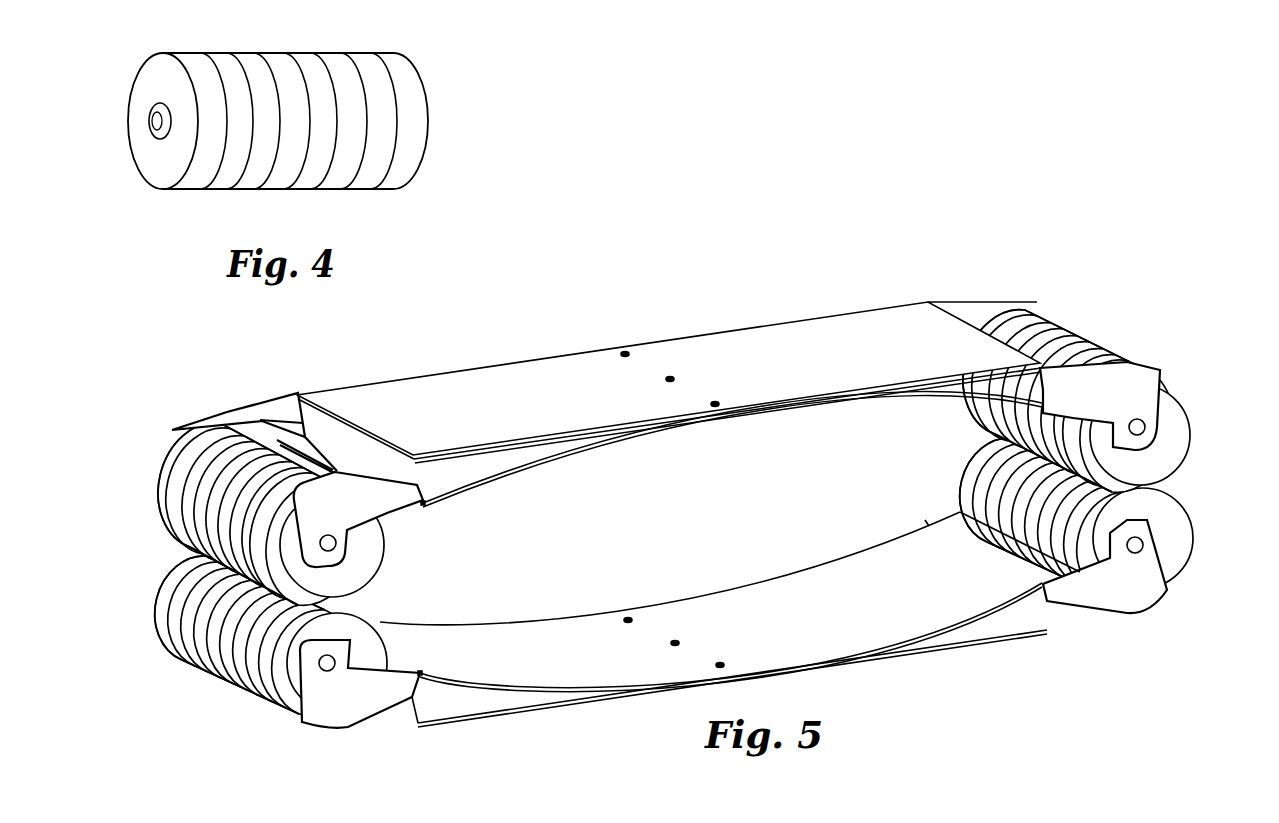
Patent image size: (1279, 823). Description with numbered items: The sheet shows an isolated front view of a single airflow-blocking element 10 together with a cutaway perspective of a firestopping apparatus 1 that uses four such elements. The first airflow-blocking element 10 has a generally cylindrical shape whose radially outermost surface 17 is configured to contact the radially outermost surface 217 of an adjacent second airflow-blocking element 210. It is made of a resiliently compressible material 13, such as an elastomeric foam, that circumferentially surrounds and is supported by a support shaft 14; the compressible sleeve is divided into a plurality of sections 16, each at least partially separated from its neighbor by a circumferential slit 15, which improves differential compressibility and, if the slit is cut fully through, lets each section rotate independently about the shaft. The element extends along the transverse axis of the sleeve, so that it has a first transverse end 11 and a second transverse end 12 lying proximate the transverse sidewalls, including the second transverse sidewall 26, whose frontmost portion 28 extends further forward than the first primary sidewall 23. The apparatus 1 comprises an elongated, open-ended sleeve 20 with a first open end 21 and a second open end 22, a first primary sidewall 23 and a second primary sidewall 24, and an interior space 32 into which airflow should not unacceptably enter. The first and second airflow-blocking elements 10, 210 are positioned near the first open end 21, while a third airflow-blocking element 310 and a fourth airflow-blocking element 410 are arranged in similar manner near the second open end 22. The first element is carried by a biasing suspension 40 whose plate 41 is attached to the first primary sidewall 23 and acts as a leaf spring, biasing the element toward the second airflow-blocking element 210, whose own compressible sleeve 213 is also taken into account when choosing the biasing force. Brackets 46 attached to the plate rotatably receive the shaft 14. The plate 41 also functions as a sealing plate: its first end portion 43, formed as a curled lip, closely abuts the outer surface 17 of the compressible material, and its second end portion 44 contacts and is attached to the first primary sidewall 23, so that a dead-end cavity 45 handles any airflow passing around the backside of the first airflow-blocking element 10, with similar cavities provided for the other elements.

In FIG. 5, the apparatus 1 is at (663, 483).
In FIG. 4, the first airflow-blocking element 10 is at (306, 125).
In FIG. 5, the first airflow-blocking element 10 is at (261, 503).
In FIG. 4, the first transverse end 11 is at (427, 105).
In FIG. 5, the first transverse end 11 is at (345, 538).
In FIG. 4, the second transverse end 12 is at (143, 78).
In FIG. 5, the second transverse end 12 is at (168, 445).
In FIG. 4, the resiliently compressible material 13 is at (363, 178).
In FIG. 5, the resiliently compressible material 13 is at (177, 508).
In FIG. 4, the support shaft 14 is at (152, 133).
In FIG. 5, the support shaft 14 is at (333, 548).
In FIG. 4, the slit 15 is at (237, 173).
In FIG. 4, the sections 16 is at (333, 175).
In FIG. 4, the radially outermost surface 17 is at (277, 58).
In FIG. 5, the radially outermost surface 17 is at (178, 477).
In FIG. 5, the sleeve 20 is at (669, 373).
In FIG. 5, the first open end 21 is at (247, 585).
In FIG. 5, the second open end 22 is at (1109, 461).
In FIG. 5, the first primary sidewall 23 is at (668, 378).
In FIG. 5, the second primary sidewall 24 is at (730, 619).
In FIG. 5, the second transverse sidewall 26 is at (745, 562).
In FIG. 5, the frontmost portion 28 is at (283, 395).
In FIG. 5, the interior space 32 is at (612, 528).
In FIG. 5, the biasing suspension 40 is at (341, 539).
In FIG. 5, the plate 41 is at (522, 467).
In FIG. 5, the first end portion 43 is at (359, 464).
In FIG. 5, the second end portion 44 is at (727, 413).
In FIG. 5, the dead-end cavity 45 is at (447, 478).
In FIG. 5, the brackets 46 is at (262, 422).
In FIG. 5, the second airflow-blocking element 210 is at (265, 687).
In FIG. 5, the sleeve 213 is at (286, 700).
In FIG. 5, the radially outermost surface 217 is at (254, 662).
In FIG. 5, the third airflow-blocking element 310 is at (1185, 396).
In FIG. 5, the fourth airflow-blocking element 410 is at (1185, 522).